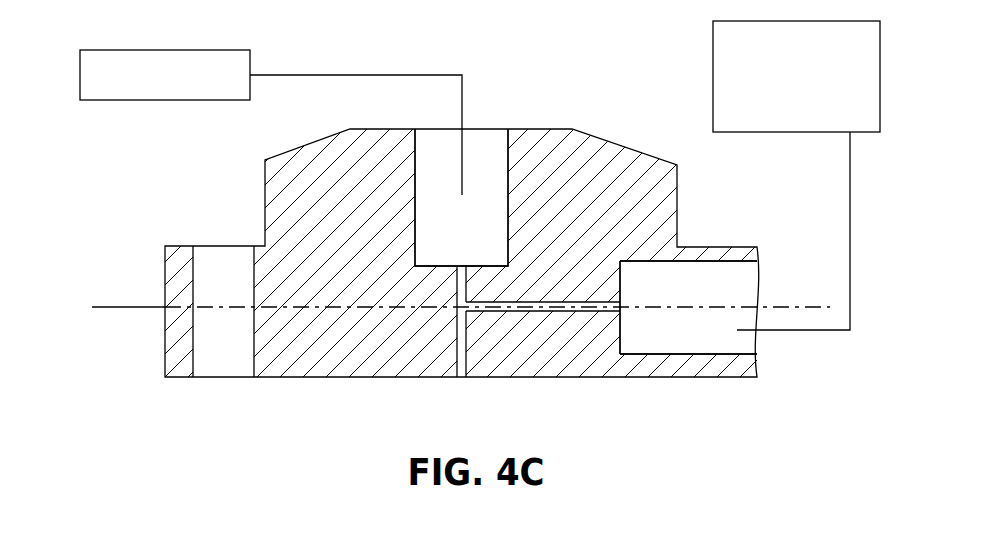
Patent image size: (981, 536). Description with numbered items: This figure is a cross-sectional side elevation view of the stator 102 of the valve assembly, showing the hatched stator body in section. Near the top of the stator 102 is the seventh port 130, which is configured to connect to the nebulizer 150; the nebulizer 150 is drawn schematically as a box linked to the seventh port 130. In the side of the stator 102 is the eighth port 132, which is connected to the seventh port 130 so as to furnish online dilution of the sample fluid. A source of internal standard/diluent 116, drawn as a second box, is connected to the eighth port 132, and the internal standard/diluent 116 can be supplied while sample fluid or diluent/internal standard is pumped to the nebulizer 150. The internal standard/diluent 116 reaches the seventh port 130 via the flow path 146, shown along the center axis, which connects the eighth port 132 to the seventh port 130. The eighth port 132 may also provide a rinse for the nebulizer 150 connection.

The stator 102 is at (537, 128).
The seventh port 130 is at (438, 142).
The eighth port 132 is at (750, 287).
The flow path 146 is at (113, 307).
The nebulizer 150 is at (112, 50).
The internal standard/diluent 116 is at (713, 77).